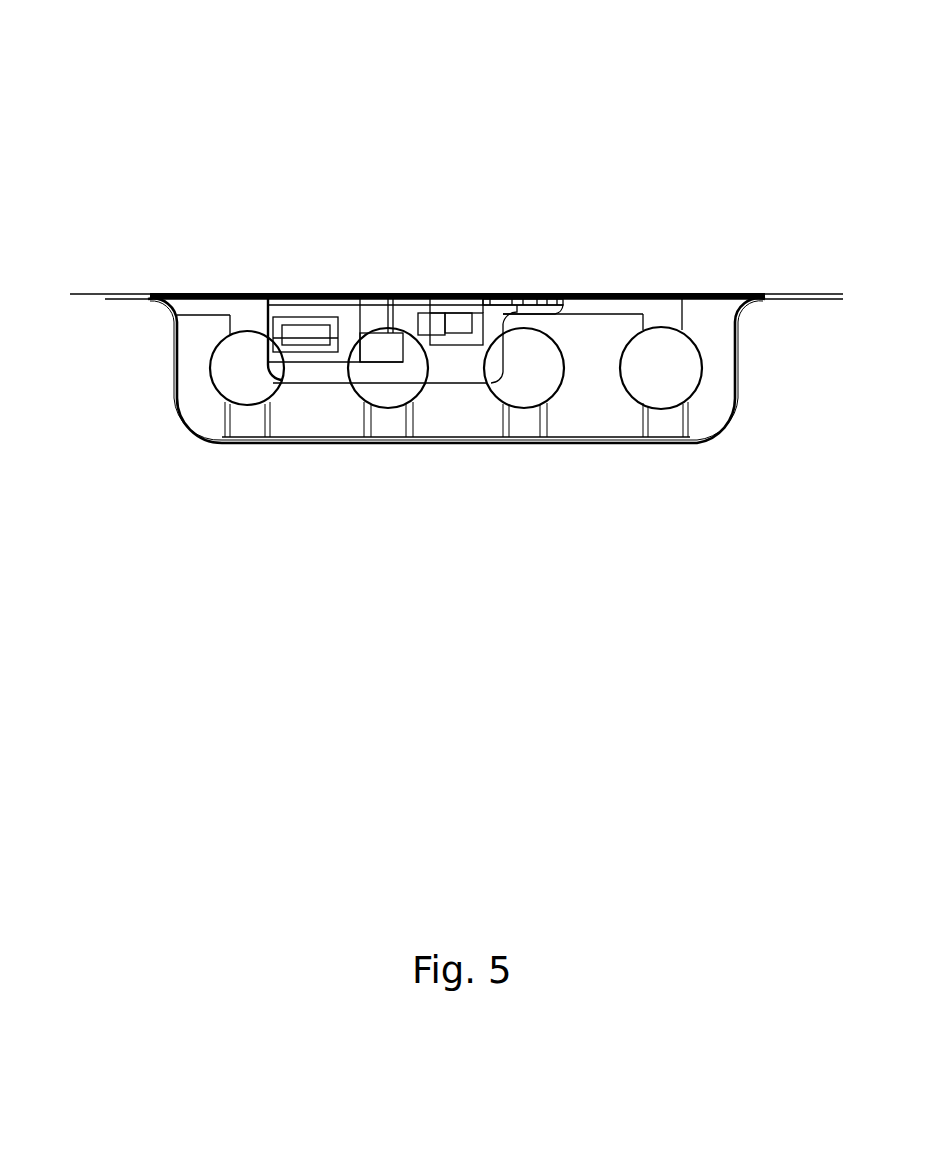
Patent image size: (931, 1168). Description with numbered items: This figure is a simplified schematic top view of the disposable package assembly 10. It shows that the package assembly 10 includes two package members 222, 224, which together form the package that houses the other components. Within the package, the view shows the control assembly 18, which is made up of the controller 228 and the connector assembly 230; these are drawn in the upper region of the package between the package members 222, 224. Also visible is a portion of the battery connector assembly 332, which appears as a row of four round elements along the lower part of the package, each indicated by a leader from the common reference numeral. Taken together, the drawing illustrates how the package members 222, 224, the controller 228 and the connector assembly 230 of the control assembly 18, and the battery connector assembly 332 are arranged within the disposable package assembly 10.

The disposable package assembly 10 is at (162, 125).
The control assembly 18 is at (469, 283).
The package member 222 is at (192, 427).
The package member 224 is at (101, 296).
The controller 228 is at (380, 296).
The connector assembly 230 is at (290, 312).
The battery connector assembly 332 is at (274, 404).